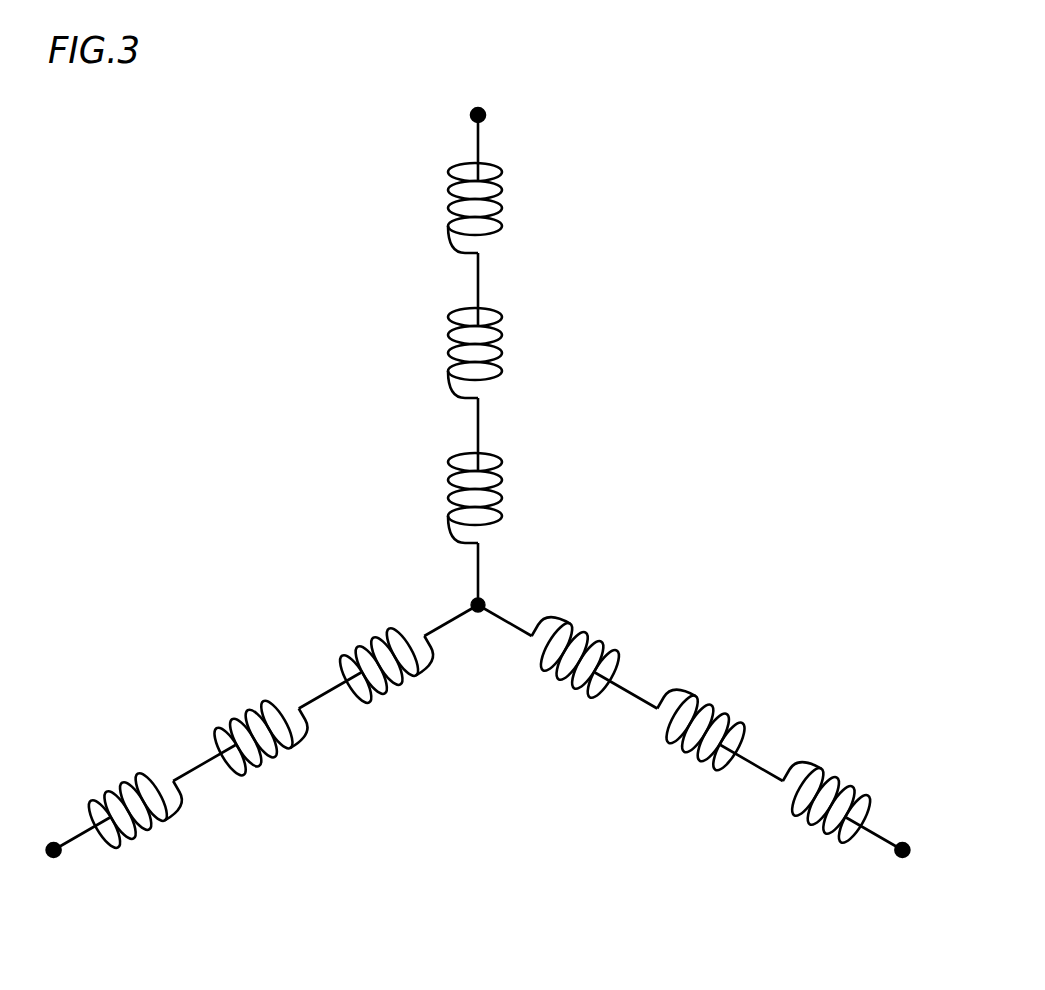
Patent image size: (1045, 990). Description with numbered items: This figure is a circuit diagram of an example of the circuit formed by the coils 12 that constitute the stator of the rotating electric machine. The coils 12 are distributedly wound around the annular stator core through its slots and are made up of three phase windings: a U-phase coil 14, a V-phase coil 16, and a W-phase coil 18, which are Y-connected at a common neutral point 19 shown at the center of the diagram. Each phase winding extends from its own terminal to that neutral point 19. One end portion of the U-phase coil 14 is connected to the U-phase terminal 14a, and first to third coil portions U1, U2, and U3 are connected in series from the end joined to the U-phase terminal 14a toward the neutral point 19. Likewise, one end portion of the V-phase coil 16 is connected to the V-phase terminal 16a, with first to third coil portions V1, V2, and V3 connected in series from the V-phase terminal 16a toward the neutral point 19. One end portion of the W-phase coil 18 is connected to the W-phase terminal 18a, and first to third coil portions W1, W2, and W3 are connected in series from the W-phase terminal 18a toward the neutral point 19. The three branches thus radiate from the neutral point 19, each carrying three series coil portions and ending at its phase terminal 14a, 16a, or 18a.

The coils 12 is at (879, 285).
The U-phase coil 14 is at (492, 344).
The U-phase terminal 14a is at (486, 112).
The V-phase coil 16 is at (711, 777).
The V-phase terminal 16a is at (904, 858).
The W-phase coil 18 is at (255, 787).
The W-phase terminal 18a is at (58, 858).
The neutral point 19 is at (488, 597).
The first coil portion U1 is at (509, 184).
The second coil portion U2 is at (509, 325).
The third coil portion U3 is at (509, 470).
The first coil portion V1 is at (842, 818).
The second coil portion V2 is at (721, 746).
The third coil portion V3 is at (592, 674).
The first coil portion W1 is at (115, 802).
The second coil portion W2 is at (237, 734).
The third coil portion W3 is at (363, 662).